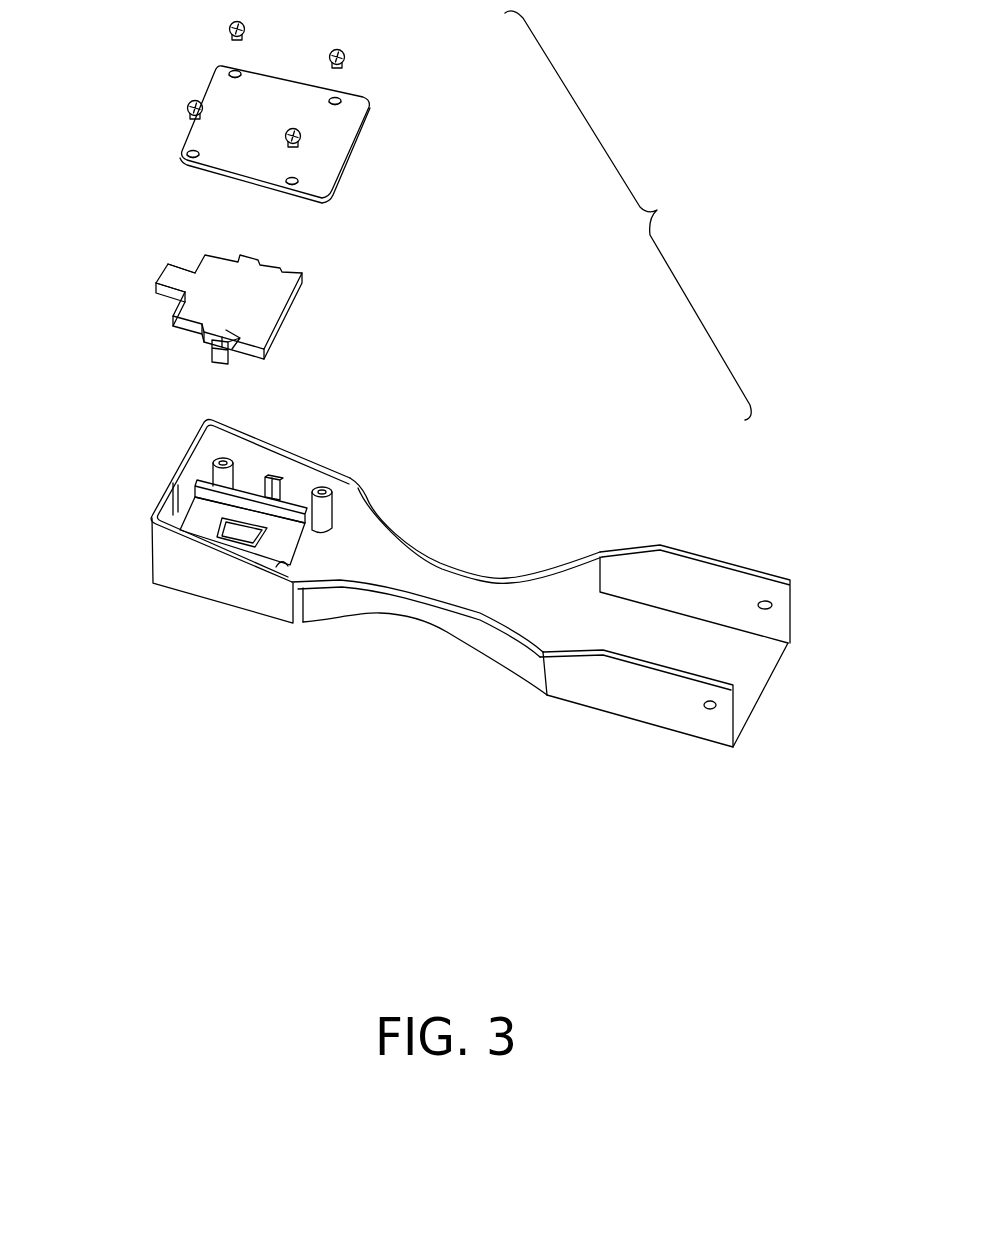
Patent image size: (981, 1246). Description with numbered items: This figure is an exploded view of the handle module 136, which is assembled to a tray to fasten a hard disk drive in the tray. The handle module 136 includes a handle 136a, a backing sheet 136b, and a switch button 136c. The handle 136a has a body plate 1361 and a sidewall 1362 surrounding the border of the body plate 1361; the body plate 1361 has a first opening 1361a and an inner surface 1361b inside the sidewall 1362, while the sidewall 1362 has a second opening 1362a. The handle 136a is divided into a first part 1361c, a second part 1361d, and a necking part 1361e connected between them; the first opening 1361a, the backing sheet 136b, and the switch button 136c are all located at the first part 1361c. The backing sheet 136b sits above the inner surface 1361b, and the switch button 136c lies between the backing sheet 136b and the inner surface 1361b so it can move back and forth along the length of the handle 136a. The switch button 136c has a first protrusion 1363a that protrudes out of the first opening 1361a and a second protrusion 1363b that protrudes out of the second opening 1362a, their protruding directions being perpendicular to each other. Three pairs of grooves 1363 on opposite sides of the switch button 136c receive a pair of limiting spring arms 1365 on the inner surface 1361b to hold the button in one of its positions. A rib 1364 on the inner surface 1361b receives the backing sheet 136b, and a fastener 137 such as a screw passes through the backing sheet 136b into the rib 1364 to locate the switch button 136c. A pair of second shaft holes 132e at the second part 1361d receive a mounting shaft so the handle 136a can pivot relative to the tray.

The handle module 136 is at (628, 215).
The handle 136a is at (458, 503).
The backing sheet 136b is at (395, 169).
The switch button 136c is at (306, 275).
The fastener 137 is at (347, 53).
The body plate 1361 is at (405, 607).
The first opening 1361a is at (238, 546).
The inner surface 1361b is at (587, 604).
The first part 1361c is at (352, 565).
The second part 1361d is at (627, 640).
The necking part 1361e is at (443, 592).
The sidewall 1362 is at (708, 588).
The second opening 1362a is at (190, 488).
The grooves 1363 is at (212, 351).
The first protrusion 1363a is at (239, 349).
The second protrusion 1363b is at (160, 277).
The rib 1364 is at (325, 508).
The limiting spring arms 1365 is at (275, 478).
The second shaft holes 132e is at (704, 720).